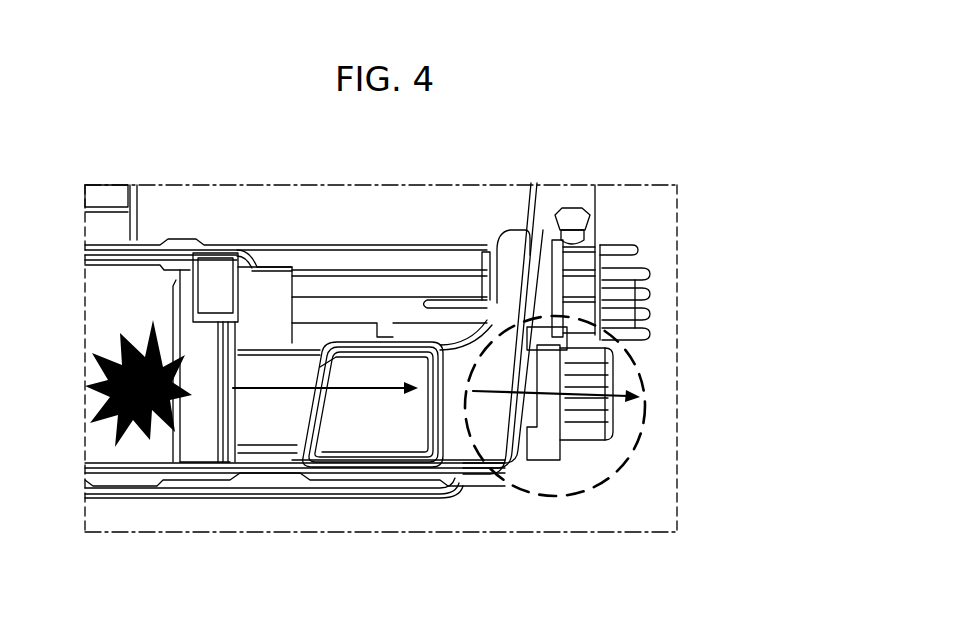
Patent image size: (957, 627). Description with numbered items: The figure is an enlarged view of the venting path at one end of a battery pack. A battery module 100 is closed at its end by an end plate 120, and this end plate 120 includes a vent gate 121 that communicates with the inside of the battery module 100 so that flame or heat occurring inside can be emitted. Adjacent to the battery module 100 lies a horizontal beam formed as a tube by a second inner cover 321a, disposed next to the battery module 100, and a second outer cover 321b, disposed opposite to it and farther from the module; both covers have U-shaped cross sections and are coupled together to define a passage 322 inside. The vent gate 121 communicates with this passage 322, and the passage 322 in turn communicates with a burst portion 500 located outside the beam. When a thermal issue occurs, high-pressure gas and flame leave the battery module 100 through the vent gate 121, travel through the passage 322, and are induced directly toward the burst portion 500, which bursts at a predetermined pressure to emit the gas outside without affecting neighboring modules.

The battery module 100 is at (118, 447).
The end plate 120 is at (200, 450).
The vent gate 121 is at (275, 428).
The second inner cover 321a is at (340, 470).
The passage 322 is at (414, 447).
The second outer cover 321b is at (465, 445).
The burst portion 500 is at (636, 376).